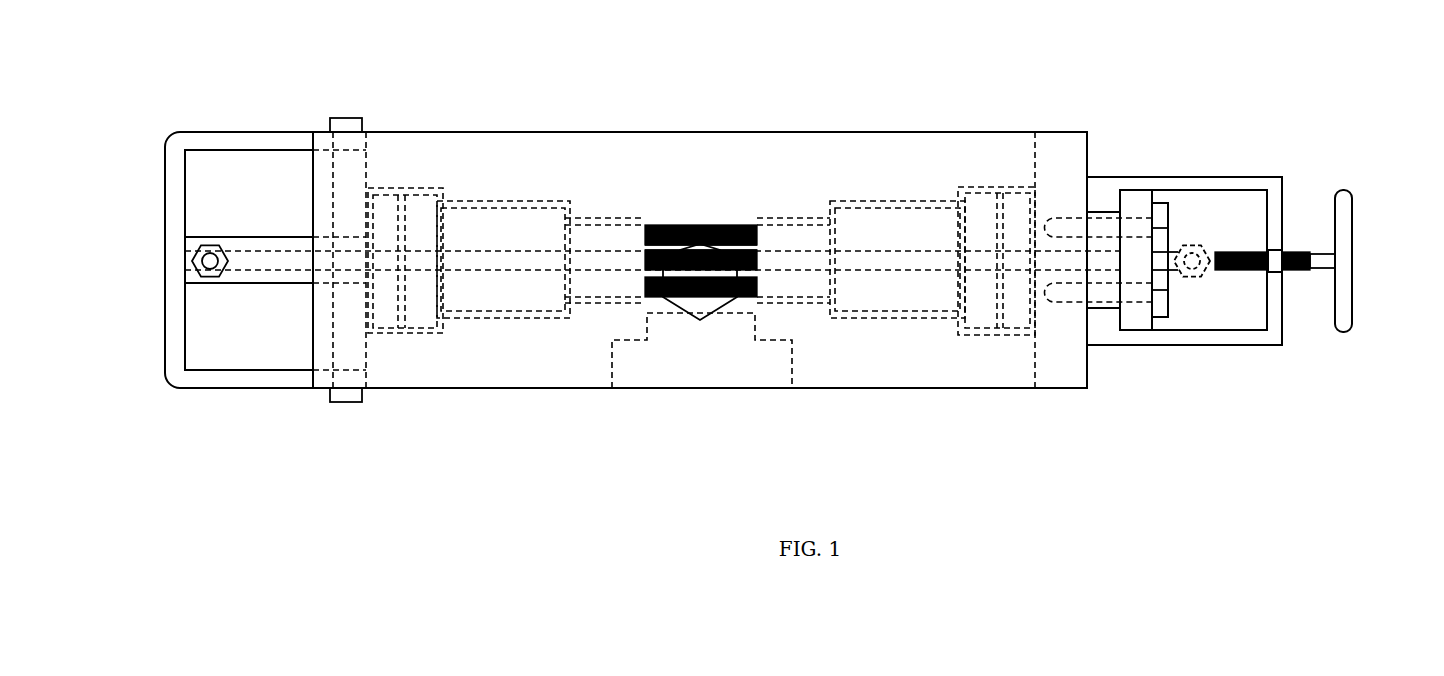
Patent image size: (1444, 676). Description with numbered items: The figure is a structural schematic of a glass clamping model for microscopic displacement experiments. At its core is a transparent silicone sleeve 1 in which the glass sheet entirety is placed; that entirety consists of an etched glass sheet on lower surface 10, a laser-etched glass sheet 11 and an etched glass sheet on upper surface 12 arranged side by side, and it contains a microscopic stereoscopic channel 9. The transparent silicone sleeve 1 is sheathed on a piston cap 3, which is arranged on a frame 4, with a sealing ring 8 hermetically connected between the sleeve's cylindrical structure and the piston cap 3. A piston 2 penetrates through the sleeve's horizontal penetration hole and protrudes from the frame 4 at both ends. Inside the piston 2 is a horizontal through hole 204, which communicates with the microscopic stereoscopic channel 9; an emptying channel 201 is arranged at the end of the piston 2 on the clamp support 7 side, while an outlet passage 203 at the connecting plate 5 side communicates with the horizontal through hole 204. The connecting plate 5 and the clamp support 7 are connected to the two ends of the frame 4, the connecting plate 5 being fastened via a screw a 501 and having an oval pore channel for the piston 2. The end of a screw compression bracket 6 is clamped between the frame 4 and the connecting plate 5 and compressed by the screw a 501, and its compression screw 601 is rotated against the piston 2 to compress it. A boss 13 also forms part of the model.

The transparent silicone sleeve 1 is at (500, 202).
The piston 2 is at (280, 242).
The emptying channel 201 is at (210, 261).
The outlet passage 203 is at (1195, 265).
The horizontal through hole 204 is at (302, 265).
The piston cap 3 is at (378, 225).
The frame 4 is at (660, 132).
The connecting plate 5 is at (1140, 202).
The screw a 501 is at (1160, 303).
The screw compression bracket 6 is at (1237, 183).
The compression screw 601 is at (1345, 222).
The clamp support 7 is at (175, 153).
The sealing ring 8 is at (405, 225).
The microscopic stereoscopic channel 9 is at (645, 245).
The etched glass sheet on lower surface 10 is at (735, 225).
The laser-etched glass sheet 11 is at (757, 250).
The etched glass sheet on upper surface 12 is at (757, 297).
The boss 13 is at (732, 360).